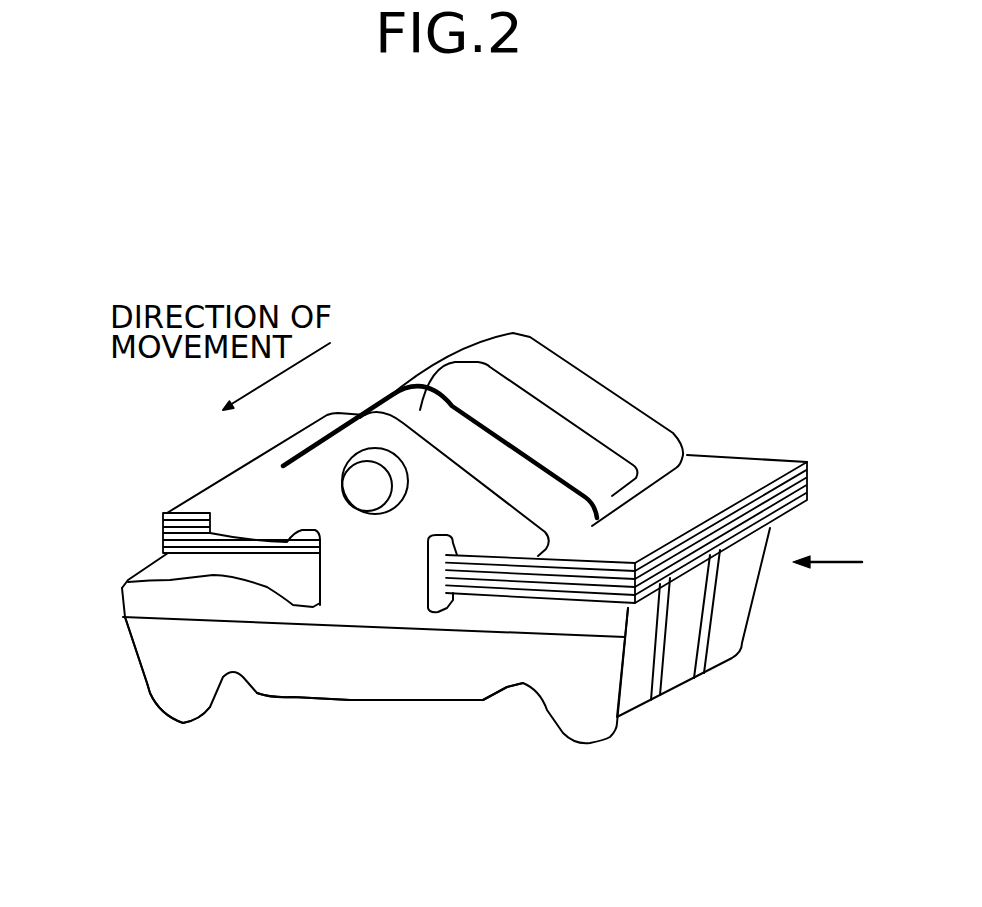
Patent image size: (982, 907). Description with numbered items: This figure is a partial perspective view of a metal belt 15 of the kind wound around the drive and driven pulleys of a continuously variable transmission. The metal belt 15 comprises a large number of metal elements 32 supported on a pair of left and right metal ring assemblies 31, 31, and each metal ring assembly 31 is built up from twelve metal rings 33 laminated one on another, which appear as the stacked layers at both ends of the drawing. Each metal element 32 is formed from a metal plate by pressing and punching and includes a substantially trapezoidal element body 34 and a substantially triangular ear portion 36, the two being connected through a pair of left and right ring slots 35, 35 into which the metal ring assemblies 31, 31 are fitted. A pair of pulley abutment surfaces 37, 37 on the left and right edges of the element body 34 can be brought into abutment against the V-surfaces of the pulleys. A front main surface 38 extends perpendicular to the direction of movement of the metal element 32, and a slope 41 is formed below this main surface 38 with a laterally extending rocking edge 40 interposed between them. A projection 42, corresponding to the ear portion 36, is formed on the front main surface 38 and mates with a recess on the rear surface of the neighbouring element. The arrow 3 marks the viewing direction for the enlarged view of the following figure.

The metal belt 15 is at (435, 313).
The metal ring assembly 31 is at (184, 500).
The metal element 32 is at (486, 726).
The metal ring 33 is at (163, 538).
The element body 34 is at (174, 680).
The ring slot 35 is at (218, 563).
The ear portion 36 is at (383, 396).
The pulley abutment surface 37 is at (633, 682).
The main surface 38 is at (377, 598).
The rocking edge 40 is at (280, 626).
The slope 41 is at (382, 684).
The projection 42 is at (366, 492).
The arrow 3 is at (827, 591).